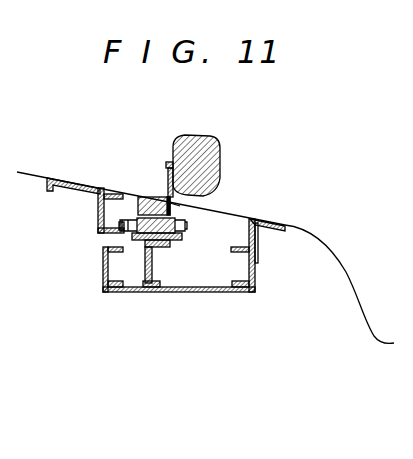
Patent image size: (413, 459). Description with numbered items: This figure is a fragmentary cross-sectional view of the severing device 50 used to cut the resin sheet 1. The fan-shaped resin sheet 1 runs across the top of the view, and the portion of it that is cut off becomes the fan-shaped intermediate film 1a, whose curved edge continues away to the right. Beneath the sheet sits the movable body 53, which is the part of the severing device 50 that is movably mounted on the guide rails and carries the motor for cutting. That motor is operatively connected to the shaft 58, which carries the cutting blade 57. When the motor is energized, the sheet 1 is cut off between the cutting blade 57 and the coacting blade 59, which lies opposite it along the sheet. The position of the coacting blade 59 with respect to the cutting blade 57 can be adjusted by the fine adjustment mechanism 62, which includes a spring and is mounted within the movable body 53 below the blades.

The resin sheet 1 is at (30, 172).
The fan-shaped intermediate film 1a is at (343, 263).
The severing device 50 is at (77, 253).
The movable body 53 is at (218, 292).
The cutting blade 57 is at (166, 182).
The shaft 58 is at (207, 157).
The coacting blade 59 is at (176, 205).
The fine adjustment mechanism 62 is at (172, 247).